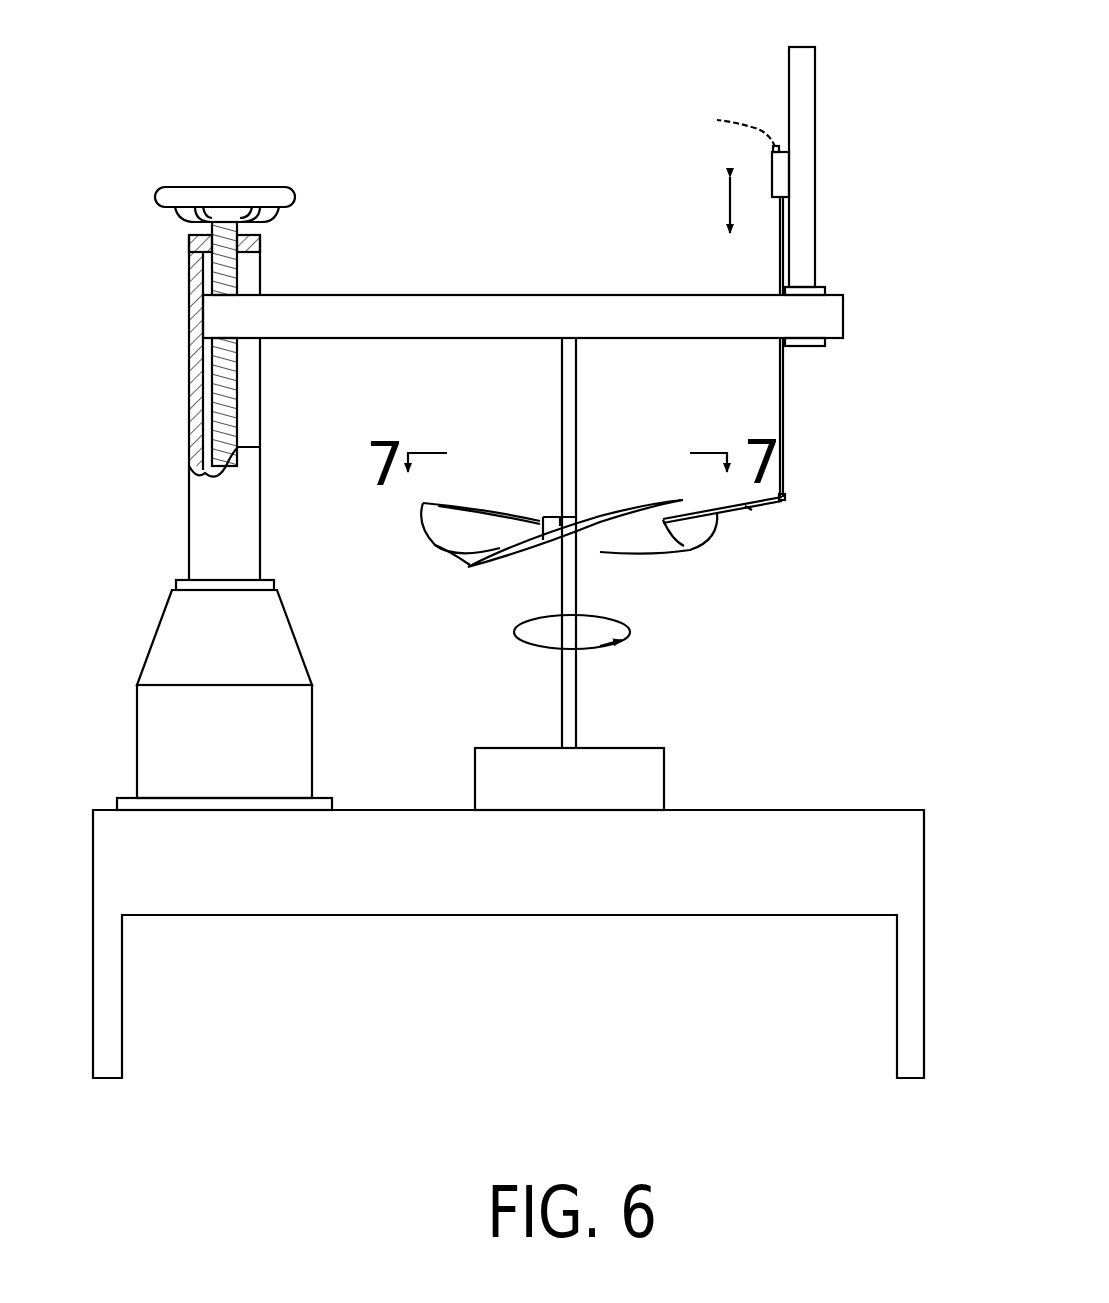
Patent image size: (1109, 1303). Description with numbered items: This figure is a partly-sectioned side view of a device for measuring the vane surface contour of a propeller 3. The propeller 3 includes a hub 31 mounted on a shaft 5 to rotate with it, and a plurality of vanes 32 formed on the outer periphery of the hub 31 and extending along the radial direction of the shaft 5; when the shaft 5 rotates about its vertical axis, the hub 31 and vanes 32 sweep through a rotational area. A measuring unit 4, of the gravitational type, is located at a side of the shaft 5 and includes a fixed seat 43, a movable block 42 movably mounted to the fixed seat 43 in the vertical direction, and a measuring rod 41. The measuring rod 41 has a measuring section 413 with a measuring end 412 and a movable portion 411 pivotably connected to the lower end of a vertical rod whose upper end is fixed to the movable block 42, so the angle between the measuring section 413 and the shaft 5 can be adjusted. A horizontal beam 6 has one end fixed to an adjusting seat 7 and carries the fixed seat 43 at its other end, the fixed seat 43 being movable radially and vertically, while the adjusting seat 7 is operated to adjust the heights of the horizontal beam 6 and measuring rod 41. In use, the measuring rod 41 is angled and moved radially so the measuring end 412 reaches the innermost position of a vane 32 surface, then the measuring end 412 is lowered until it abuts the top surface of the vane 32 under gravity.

The propeller 3 is at (553, 547).
The hub 31 is at (553, 517).
The vanes 32 is at (438, 527).
The measuring unit 4 is at (774, 348).
The measuring rod 41 is at (790, 443).
The movable portion 411 is at (785, 503).
The measuring end 412 is at (663, 521).
The measuring section 413 is at (750, 507).
The movable block 42 is at (777, 173).
The fixed seat 43 is at (802, 138).
The shaft 5 is at (575, 713).
The horizontal beam 6 is at (410, 303).
The adjusting seat 7 is at (203, 515).